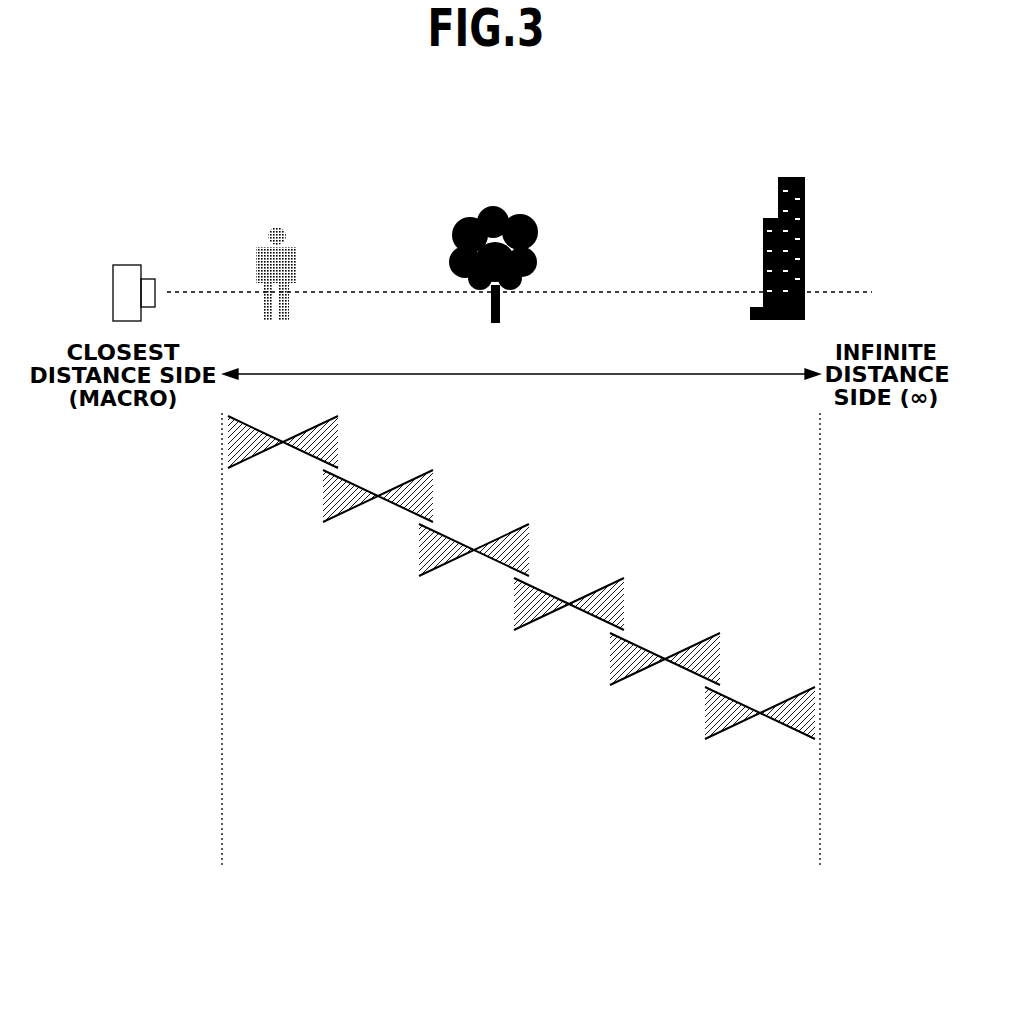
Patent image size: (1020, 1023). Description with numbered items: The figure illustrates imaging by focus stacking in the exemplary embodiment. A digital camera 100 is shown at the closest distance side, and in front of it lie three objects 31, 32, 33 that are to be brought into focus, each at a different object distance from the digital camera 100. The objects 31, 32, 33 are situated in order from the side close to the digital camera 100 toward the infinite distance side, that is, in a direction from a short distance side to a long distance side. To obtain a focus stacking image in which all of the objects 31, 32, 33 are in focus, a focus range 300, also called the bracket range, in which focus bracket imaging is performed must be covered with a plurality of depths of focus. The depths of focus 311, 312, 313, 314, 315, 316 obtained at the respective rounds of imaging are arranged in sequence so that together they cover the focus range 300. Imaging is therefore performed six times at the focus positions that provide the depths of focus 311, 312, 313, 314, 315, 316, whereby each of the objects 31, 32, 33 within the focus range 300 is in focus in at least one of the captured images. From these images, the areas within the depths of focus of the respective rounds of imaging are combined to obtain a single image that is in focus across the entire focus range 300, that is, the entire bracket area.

The digital camera 100 is at (125, 265).
The object 31 is at (281, 226).
The object 32 is at (522, 210).
The object 33 is at (793, 175).
The focus range 300 is at (656, 376).
The depth of focus 311 is at (258, 470).
The depth of focus 312 is at (353, 524).
The depth of focus 313 is at (449, 578).
The depth of focus 314 is at (544, 632).
The depth of focus 315 is at (640, 687).
The depth of focus 316 is at (735, 741).